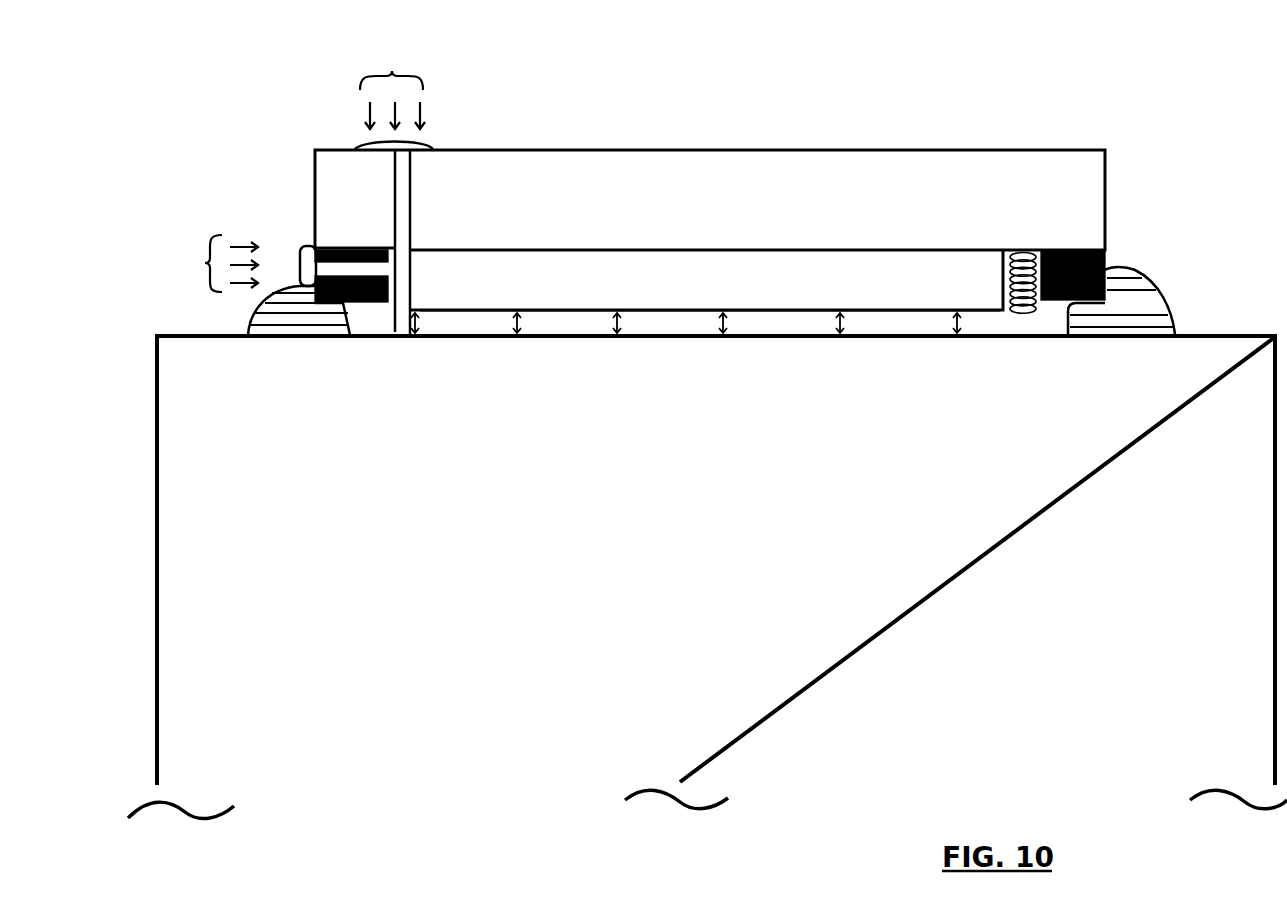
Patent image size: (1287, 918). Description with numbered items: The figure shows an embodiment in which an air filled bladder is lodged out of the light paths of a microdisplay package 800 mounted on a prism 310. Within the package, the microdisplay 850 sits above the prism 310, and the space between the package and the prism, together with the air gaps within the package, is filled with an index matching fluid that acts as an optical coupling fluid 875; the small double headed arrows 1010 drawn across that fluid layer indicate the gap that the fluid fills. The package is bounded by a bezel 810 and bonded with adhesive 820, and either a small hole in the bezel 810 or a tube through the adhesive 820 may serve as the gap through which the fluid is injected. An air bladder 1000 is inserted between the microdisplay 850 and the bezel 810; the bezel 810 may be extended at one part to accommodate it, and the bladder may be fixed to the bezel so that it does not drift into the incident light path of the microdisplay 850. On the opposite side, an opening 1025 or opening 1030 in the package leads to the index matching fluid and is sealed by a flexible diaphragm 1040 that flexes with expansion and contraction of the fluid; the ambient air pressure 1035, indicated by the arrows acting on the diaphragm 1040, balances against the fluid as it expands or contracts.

The prism 310 is at (346, 525).
The microdisplay package 800 is at (937, 110).
The bezel 810 is at (1108, 263).
The adhesive 820 is at (1150, 310).
The microdisplay 850 is at (790, 238).
The optical coupling fluid 875 is at (768, 320).
The air bladder 1000 is at (1026, 316).
The gap spacing arrows 1010 is at (613, 318).
The opening 1025 is at (373, 268).
The opening 1030 is at (403, 207).
The ambient air pressure 1035 is at (365, 73).
The diaphragm 1040 is at (302, 250).